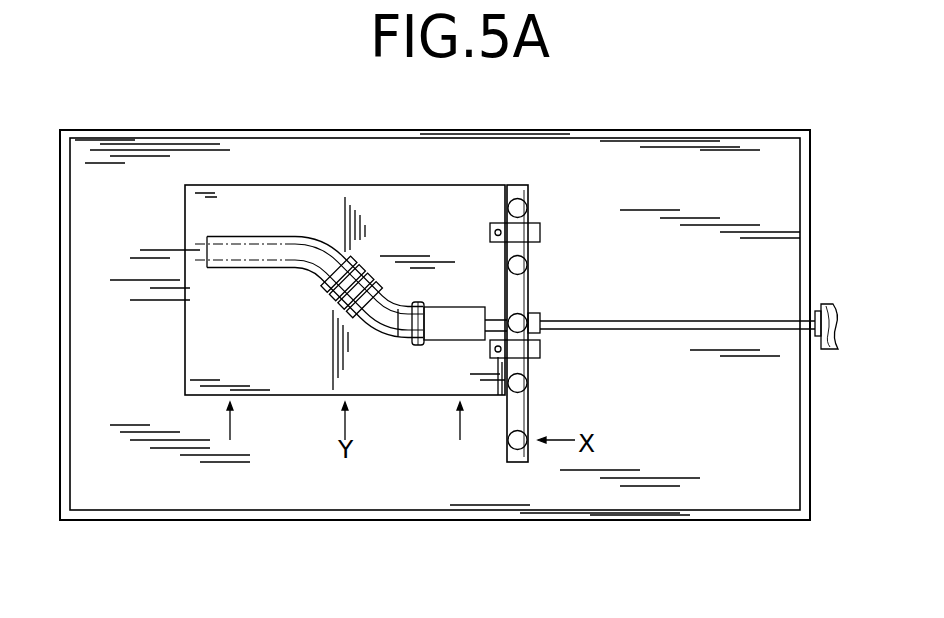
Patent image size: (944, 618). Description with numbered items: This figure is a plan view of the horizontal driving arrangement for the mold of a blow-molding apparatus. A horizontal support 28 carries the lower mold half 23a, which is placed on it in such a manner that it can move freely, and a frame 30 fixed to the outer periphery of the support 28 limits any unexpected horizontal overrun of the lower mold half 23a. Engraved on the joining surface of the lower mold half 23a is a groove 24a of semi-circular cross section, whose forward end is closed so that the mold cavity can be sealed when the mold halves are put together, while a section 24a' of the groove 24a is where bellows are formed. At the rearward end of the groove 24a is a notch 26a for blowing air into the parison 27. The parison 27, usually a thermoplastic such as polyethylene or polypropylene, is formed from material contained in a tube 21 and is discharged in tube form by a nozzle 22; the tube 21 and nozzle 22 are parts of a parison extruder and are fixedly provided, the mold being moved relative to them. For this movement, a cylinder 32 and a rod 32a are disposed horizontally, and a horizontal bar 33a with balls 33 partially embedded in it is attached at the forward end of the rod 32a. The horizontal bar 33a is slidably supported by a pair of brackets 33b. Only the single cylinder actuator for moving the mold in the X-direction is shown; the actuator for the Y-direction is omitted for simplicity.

The frame 30 is at (285, 130).
The horizontal support 28 is at (384, 138).
The lower mold half 23a is at (243, 185).
The parison 27 is at (285, 240).
The groove 24a is at (315, 287).
The bellows section of groove 24a' is at (330, 300).
The nozzle 22 is at (407, 331).
The tube 21 is at (418, 345).
The notch 26a is at (495, 320).
The balls 33 is at (508, 440).
The horizontal bar 33a is at (528, 412).
The brackets 33b is at (541, 236).
The rod 32a is at (672, 321).
The cylinder 32 is at (824, 303).